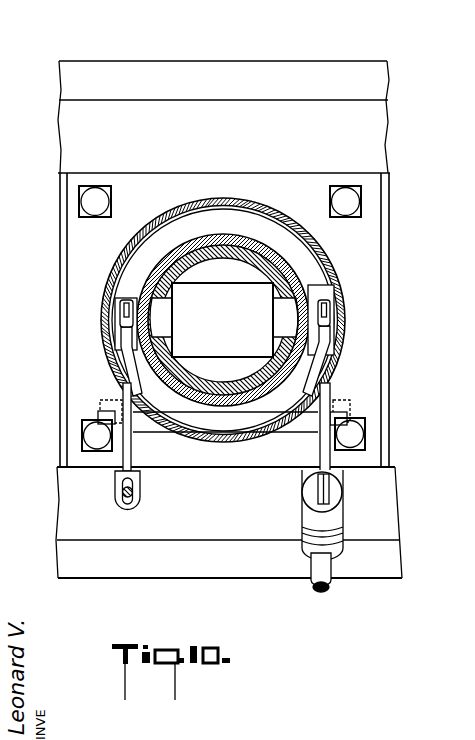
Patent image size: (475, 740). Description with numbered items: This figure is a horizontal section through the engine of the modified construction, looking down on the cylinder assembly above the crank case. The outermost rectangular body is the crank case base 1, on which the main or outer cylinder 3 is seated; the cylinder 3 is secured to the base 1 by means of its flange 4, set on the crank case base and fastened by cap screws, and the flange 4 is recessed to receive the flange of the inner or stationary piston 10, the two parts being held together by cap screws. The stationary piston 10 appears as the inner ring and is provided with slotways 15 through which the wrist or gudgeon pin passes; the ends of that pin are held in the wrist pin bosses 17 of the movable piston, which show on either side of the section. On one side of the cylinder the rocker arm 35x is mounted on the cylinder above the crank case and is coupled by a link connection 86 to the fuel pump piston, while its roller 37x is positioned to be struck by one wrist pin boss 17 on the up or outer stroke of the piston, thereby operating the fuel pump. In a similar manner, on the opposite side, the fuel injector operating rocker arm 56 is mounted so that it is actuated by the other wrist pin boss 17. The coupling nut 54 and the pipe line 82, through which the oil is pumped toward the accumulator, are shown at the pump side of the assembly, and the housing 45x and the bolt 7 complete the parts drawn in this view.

The base of the crank case 1 is at (229, 319).
The main or outer cylinder 3 is at (158, 216).
The flange of the cylinder 4 is at (397, 372).
The bolt 7 is at (332, 266).
The inner or stationary piston 10 is at (233, 241).
The slotways 15 is at (183, 273).
The wrist pin bosses 17 is at (122, 333).
The roller 37x is at (120, 308).
The rocker arm 35x is at (290, 489).
The housing 45x is at (345, 515).
The coupling nut 54 is at (302, 559).
The fuel injector operating rocker arm 56 is at (118, 466).
The pipe line 82 is at (313, 589).
The link connection 86 is at (318, 494).